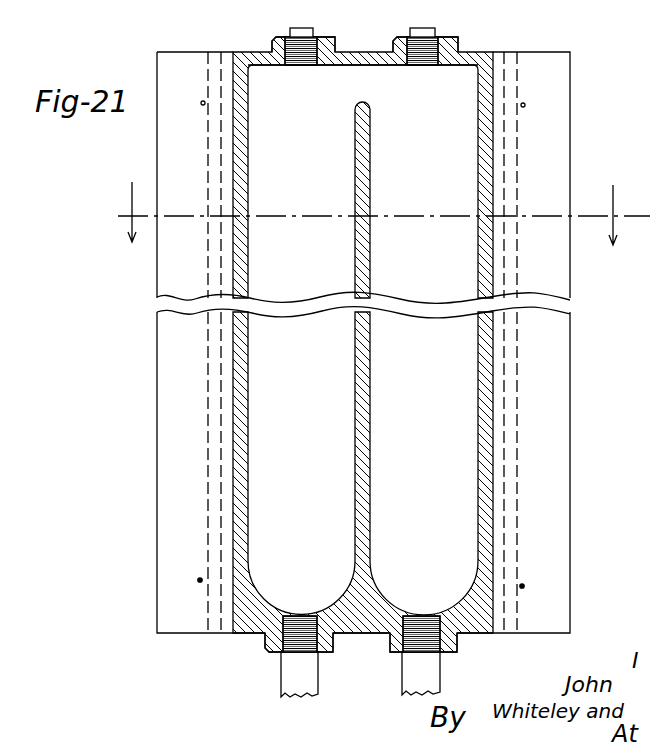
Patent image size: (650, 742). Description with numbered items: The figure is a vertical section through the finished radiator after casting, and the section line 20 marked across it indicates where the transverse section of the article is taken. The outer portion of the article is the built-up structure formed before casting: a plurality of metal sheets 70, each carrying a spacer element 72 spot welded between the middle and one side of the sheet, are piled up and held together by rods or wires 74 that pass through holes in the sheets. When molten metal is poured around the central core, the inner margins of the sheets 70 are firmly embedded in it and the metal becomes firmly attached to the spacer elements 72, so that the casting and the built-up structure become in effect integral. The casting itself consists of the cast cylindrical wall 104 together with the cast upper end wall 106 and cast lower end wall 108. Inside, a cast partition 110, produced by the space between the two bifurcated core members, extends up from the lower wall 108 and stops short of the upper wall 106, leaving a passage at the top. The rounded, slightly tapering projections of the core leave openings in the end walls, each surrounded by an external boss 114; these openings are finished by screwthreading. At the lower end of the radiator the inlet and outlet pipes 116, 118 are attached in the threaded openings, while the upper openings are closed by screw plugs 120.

The section line 20— 20 is at (384, 223).
The metal sheet 70 is at (170, 394).
The spacer element 72 is at (213, 151).
The rods or wires 74 is at (201, 105).
The cast cylindrical wall 104 is at (243, 427).
The cast upper end wall 106 is at (480, 55).
The cast lower end wall 108 is at (363, 600).
The cast partition 110 is at (366, 437).
The external bosses 114 is at (271, 44).
The inlet pipe 116 is at (281, 690).
The outlet pipe 118 is at (403, 690).
The screw plugs 120 is at (411, 33).